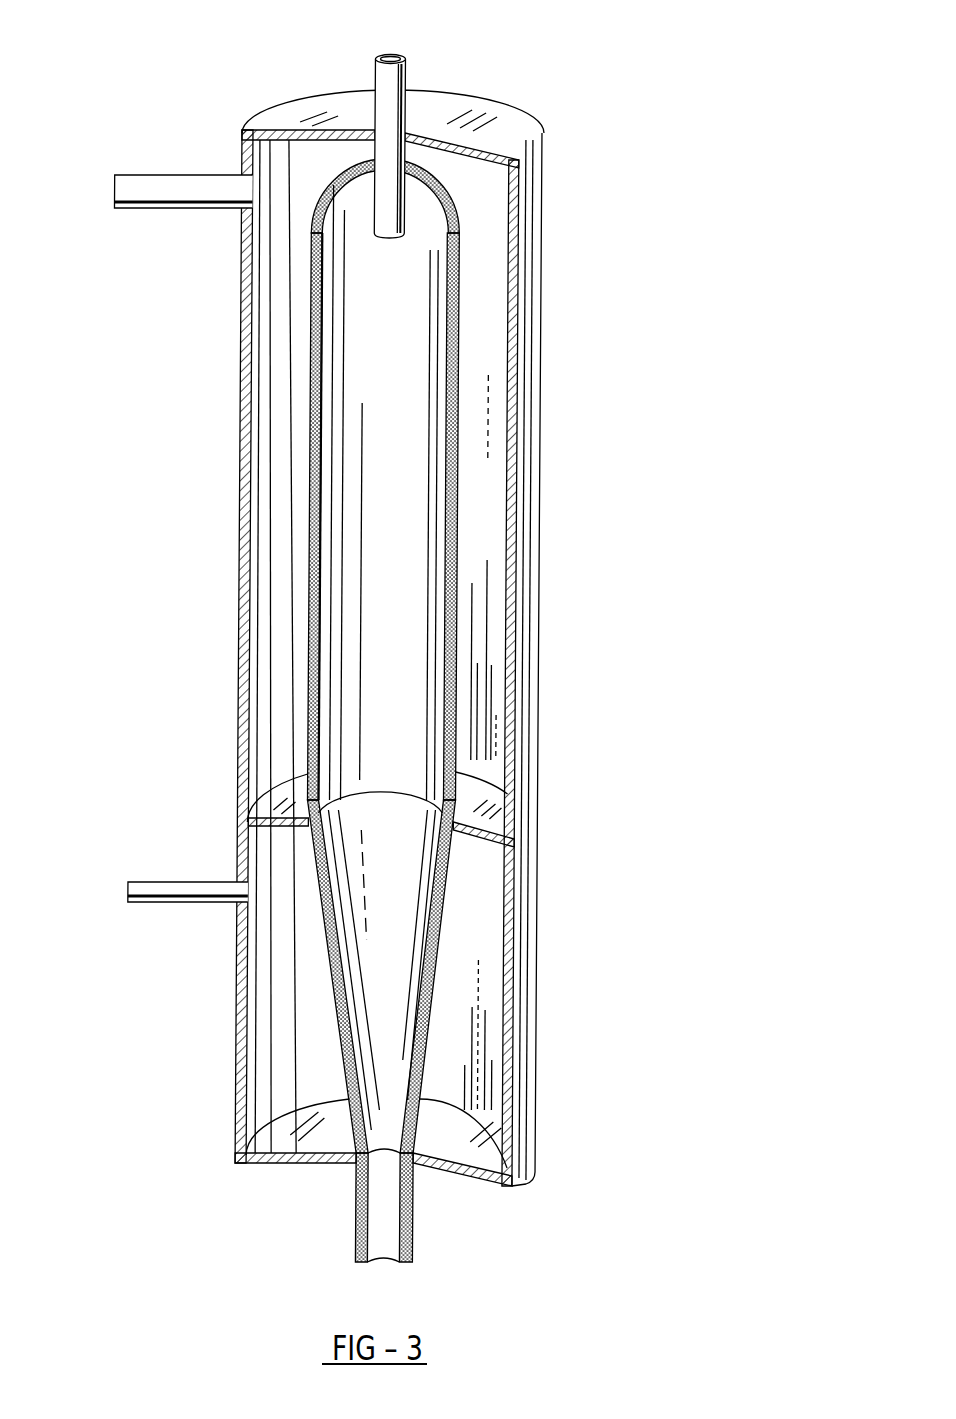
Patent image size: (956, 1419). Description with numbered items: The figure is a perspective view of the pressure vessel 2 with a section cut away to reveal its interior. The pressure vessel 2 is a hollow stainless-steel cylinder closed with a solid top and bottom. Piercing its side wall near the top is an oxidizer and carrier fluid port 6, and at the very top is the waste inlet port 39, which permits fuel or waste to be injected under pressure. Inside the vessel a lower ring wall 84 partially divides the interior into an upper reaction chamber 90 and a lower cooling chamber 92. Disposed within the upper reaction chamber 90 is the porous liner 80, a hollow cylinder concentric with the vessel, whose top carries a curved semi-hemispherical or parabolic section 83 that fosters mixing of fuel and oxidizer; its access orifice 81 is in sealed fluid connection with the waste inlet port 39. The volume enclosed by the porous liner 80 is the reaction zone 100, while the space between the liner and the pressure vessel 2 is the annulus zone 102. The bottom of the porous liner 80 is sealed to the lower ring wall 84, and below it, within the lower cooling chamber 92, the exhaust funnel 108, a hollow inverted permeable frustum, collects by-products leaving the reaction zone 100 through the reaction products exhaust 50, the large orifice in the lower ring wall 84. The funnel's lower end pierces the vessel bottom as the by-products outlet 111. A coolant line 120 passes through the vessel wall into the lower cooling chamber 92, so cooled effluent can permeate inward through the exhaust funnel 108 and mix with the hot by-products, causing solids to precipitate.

The pressure vessel 2 is at (545, 217).
The oxidizer and carrier fluid port 6 is at (182, 180).
The waste inlet port 39 is at (392, 77).
The reaction products exhaust 50 is at (378, 813).
The porous liner 80 is at (313, 392).
The access orifice 81 is at (375, 157).
The curved semi-hemispherical or parabolic section 83 is at (450, 187).
The lower ring wall 84 is at (453, 822).
The upper reaction chamber 90 is at (485, 377).
The lower cooling chamber 92 is at (473, 945).
The reaction zone 100 is at (380, 545).
The annulus zone 102 is at (488, 293).
The exhaust funnel 108 is at (332, 978).
The by-products outlet 111 is at (357, 1202).
The coolant line 120 is at (177, 885).